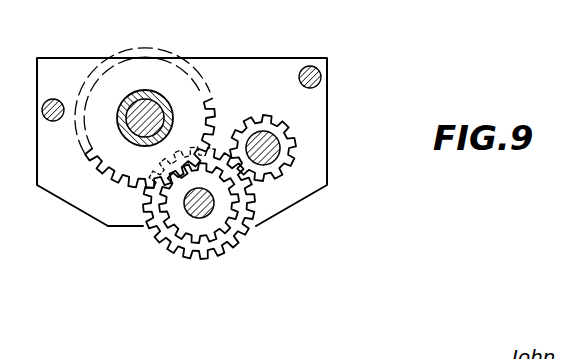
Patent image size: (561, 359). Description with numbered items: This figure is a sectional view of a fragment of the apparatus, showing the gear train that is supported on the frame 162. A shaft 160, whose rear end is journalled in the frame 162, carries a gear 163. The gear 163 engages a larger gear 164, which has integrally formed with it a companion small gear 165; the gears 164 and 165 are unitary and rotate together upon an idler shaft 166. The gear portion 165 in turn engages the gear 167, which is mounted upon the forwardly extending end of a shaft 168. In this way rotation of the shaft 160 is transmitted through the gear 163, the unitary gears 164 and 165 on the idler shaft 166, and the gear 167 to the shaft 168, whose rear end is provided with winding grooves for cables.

The shaft 160 is at (266, 134).
The frame 162 is at (65, 67).
The gear 163 is at (292, 143).
The larger gear 164 is at (233, 243).
The companion small gear 165 is at (188, 228).
The idler shaft 166 is at (199, 219).
The gear 167 is at (103, 173).
The shaft 168 is at (152, 112).